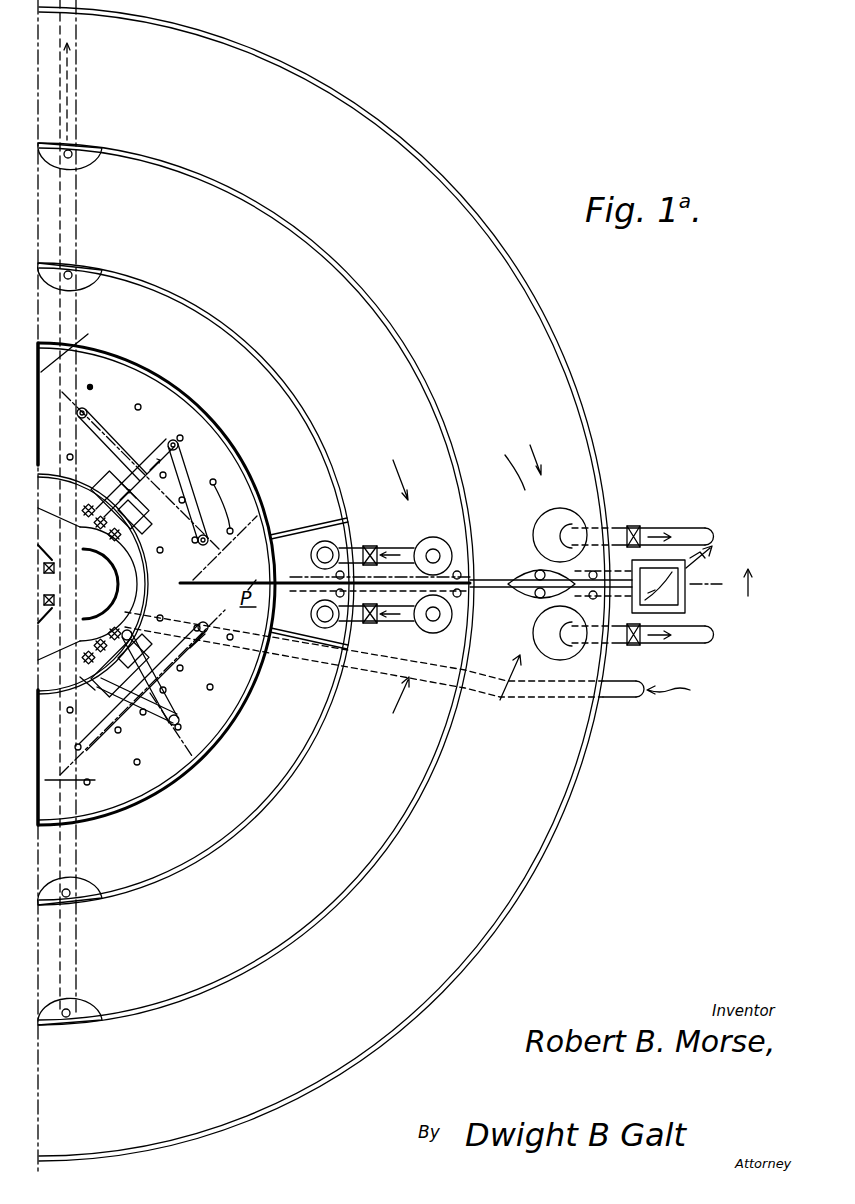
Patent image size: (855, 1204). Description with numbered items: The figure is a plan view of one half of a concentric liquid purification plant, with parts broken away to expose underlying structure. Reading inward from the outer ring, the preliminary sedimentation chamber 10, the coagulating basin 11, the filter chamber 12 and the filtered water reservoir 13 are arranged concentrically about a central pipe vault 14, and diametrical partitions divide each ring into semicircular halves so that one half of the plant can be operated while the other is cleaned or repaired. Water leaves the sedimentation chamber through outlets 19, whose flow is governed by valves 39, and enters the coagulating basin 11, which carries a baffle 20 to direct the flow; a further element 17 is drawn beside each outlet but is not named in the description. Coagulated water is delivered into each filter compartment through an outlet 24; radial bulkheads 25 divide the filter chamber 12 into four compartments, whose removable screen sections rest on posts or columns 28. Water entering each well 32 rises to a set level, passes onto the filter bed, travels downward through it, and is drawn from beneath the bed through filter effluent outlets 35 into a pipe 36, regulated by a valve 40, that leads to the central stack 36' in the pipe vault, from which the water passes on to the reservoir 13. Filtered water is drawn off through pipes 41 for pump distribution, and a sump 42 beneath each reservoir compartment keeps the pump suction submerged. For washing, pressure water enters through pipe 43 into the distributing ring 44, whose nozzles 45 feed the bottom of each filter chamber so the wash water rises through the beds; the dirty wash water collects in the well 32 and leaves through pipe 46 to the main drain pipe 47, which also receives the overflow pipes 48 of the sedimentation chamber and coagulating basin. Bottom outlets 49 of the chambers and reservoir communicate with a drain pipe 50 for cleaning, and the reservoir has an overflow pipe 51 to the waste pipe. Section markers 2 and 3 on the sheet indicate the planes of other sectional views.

The section line 2 is at (758, 583).
The section line 3 is at (30, 18).
The preliminary sedimentation chamber 10 is at (362, 390).
The coagulating basin 11 is at (282, 437).
The filter chamber 12 is at (165, 410).
The filtered water reservoir 13 is at (352, 943).
The central pipe vault 14 is at (82, 690).
The pipe connection wheel 17 is at (433, 537).
The outlets 19 is at (311, 555).
The baffles 20 is at (318, 530).
The outlet 24 is at (130, 530).
The radial bulkheads 25 is at (83, 557).
The posts or columns 28 is at (218, 506).
The well 32 is at (177, 475).
The filter effluent pipes or outlets 35 is at (190, 656).
The pipe 36 is at (109, 584).
The head, standpipe or stack 36' is at (72, 584).
The valves 39 is at (370, 546).
The valves 40 is at (92, 480).
The pipes 41 is at (690, 528).
The well or sump 42 is at (558, 508).
The pipe 43 is at (630, 697).
The ring or distributing pipe 44 is at (135, 573).
The nozzles or outlets 45 is at (122, 390).
The pipe 46 is at (125, 456).
The waste or main drain pipe 47 is at (78, 308).
The overflow pipe 48 is at (84, 151).
The bottom outlets 49 is at (462, 572).
The waste or drain pipe 50 is at (492, 578).
The overflow pipe 51 is at (530, 565).